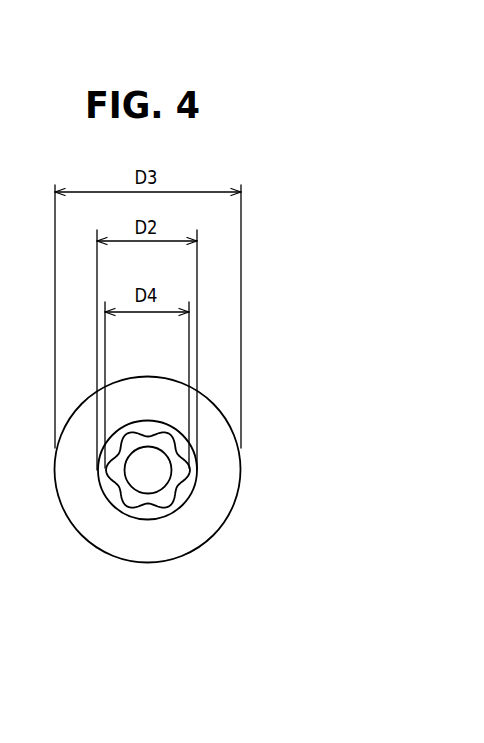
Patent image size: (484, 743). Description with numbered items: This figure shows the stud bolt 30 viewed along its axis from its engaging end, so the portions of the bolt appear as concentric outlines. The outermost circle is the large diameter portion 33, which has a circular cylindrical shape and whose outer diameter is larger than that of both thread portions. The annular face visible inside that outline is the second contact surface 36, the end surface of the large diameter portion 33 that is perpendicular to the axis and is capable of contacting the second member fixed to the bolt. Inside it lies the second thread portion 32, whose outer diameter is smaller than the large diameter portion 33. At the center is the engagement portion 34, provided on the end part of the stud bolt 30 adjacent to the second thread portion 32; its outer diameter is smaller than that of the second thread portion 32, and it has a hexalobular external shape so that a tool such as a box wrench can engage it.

The stud bolt 30 is at (270, 371).
The second thread portion 32 is at (142, 520).
The large diameter portion 33 is at (241, 487).
The engagement portion 34 is at (114, 487).
The second contact surface 36 is at (187, 532).